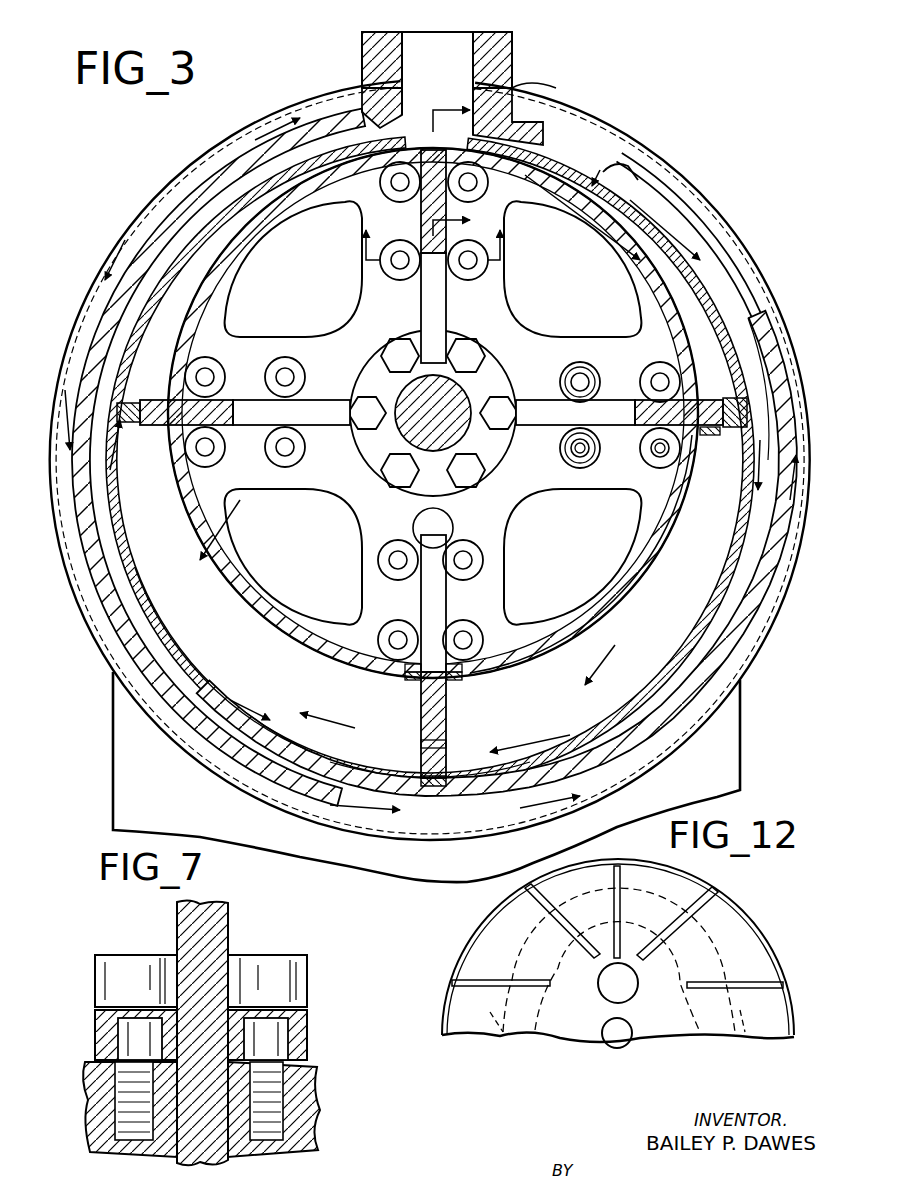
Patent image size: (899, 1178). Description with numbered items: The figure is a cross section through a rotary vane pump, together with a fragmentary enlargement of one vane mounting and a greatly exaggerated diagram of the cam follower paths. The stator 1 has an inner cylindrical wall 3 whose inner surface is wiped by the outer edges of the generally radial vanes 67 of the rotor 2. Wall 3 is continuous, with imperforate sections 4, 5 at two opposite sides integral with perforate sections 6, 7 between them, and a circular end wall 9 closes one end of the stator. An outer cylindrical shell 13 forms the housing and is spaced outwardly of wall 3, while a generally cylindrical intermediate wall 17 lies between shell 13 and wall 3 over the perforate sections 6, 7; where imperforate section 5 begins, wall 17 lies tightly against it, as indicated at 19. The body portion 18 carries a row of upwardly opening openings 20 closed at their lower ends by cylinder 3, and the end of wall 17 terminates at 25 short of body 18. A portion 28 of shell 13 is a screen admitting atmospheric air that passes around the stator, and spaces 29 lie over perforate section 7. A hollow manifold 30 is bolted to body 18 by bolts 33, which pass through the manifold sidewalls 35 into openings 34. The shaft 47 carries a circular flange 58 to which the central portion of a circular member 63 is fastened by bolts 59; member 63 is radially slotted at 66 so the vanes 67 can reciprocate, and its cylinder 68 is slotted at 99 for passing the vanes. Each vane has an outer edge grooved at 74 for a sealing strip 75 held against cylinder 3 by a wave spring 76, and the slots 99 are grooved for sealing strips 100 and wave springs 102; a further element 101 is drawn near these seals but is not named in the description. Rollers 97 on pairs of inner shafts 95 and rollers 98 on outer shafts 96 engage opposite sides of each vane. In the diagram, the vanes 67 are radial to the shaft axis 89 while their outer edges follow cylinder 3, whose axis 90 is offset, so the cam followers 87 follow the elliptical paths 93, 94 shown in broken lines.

In FIG. 3, the stator 1 is at (762, 262).
In FIG. 3, the rotor 2 is at (700, 338).
In FIG. 3, the inner cylindrical wall 3 is at (738, 572).
In FIG. 12, the inner cylindrical wall 3 is at (636, 862).
In FIG. 3, the imperforate section 4 is at (555, 164).
In FIG. 3, the imperforate section 5 is at (385, 785).
In FIG. 3, the perforate section 6 is at (47, 412).
In FIG. 3, the perforate section 7 is at (822, 408).
In FIG. 3, the end wall 9 is at (636, 650).
In FIG. 3, the outer cylindrical shell 13 is at (680, 192).
In FIG. 3, the intermediate wall 17 is at (102, 290).
In FIG. 3, the body portion 18 is at (514, 82).
In FIG. 3, the portion of intermediate wall 19 is at (412, 796).
In FIG. 3, the openings 20 is at (422, 102).
In FIG. 3, the end of intermediate wall 25 is at (608, 169).
In FIG. 3, the screen 28 is at (262, 132).
In FIG. 3, the spaces 29 is at (745, 338).
In FIG. 3, the manifold 30 is at (358, 72).
In FIG. 3, the bolts 33 is at (366, 52).
In FIG. 3, the openings 34 is at (370, 100).
In FIG. 3, the sidewalls 35 is at (546, 87).
In FIG. 3, the shaft 47 is at (460, 398).
In FIG. 3, the circular flange 58 is at (484, 448).
In FIG. 3, the bolts 59 is at (400, 474).
In FIG. 3, the circular member 63 is at (556, 342).
In FIG. 7, the circular member 63 is at (316, 1124).
In FIG. 3, the radial slots 66 is at (612, 400).
In FIG. 3, the vanes 67 is at (244, 436).
In FIG. 7, the vanes 67 is at (230, 926).
In FIG. 12, the vanes 67 is at (622, 894).
In FIG. 3, the rotor cylinder 68 is at (668, 548).
In FIG. 3, the groove 74 is at (126, 422).
In FIG. 3, the sealing strip 75 is at (752, 408).
In FIG. 3, the wave spring 76 is at (722, 430).
In FIG. 12, the cam follower 87 is at (672, 932).
In FIG. 12, the axis of shaft 89 is at (630, 978).
In FIG. 12, the axis of inner cylinder 90 is at (628, 1044).
In FIG. 12, the elliptical path 93 is at (700, 1012).
In FIG. 12, the elliptical path 94 is at (722, 972).
In FIG. 3, the inner shafts 95 is at (574, 456).
In FIG. 7, the inner shafts 95 is at (282, 1100).
In FIG. 3, the outer shafts 96 is at (648, 446).
In FIG. 3, the rollers 97 is at (582, 366).
In FIG. 7, the rollers 97 is at (306, 1036).
In FIG. 3, the rollers 98 is at (660, 368).
In FIG. 7, the rollers 98 is at (304, 984).
In FIG. 3, the slots 99 is at (418, 690).
In FIG. 3, the sealing strips 100 is at (404, 682).
In FIG. 3, the lock plate 101 is at (404, 666).
In FIG. 3, the wave springs 102 is at (464, 676).